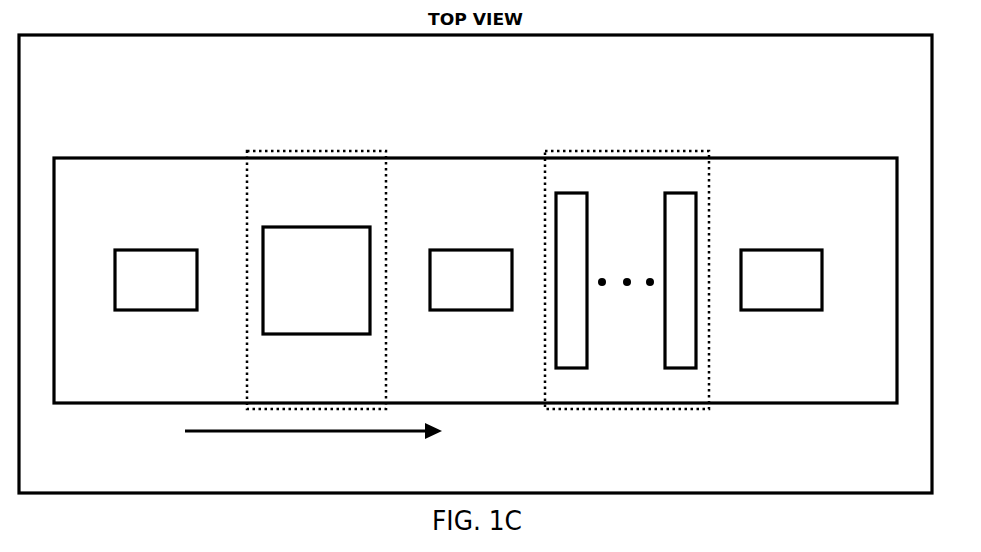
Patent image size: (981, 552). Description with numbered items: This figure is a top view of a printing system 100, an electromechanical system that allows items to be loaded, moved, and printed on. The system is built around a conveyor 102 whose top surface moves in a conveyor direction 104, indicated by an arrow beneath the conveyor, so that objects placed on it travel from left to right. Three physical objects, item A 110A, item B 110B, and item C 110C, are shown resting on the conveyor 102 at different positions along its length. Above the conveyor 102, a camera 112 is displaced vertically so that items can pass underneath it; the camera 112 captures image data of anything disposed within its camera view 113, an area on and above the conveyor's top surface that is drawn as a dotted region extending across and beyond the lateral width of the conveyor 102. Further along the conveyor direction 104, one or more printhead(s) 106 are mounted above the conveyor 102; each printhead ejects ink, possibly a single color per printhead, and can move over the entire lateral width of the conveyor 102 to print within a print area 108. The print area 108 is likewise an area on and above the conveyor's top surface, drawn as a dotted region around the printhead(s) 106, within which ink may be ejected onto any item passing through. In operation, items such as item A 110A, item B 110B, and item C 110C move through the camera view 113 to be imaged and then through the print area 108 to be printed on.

The printing system 100 is at (62, 124).
The conveyor 102 is at (193, 394).
The conveyor direction 104 is at (313, 442).
The printhead(s) 106 is at (697, 193).
The print area 108 is at (709, 375).
The item A 110A is at (180, 306).
The item B 110B is at (495, 306).
The item C 110C is at (805, 306).
The camera 112 is at (335, 306).
The camera view 113 is at (385, 182).